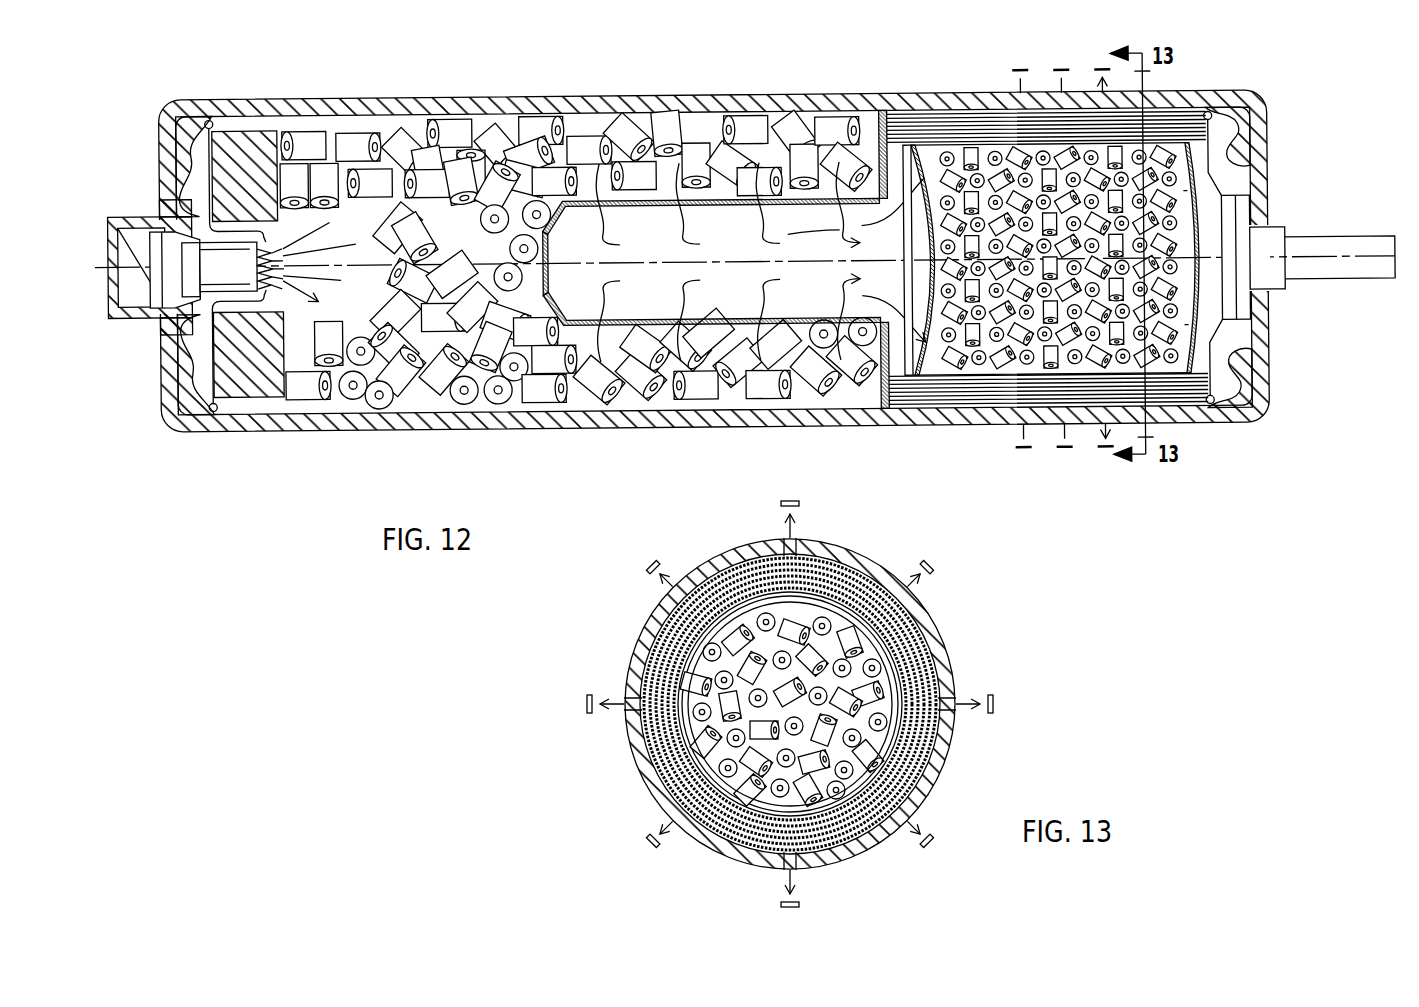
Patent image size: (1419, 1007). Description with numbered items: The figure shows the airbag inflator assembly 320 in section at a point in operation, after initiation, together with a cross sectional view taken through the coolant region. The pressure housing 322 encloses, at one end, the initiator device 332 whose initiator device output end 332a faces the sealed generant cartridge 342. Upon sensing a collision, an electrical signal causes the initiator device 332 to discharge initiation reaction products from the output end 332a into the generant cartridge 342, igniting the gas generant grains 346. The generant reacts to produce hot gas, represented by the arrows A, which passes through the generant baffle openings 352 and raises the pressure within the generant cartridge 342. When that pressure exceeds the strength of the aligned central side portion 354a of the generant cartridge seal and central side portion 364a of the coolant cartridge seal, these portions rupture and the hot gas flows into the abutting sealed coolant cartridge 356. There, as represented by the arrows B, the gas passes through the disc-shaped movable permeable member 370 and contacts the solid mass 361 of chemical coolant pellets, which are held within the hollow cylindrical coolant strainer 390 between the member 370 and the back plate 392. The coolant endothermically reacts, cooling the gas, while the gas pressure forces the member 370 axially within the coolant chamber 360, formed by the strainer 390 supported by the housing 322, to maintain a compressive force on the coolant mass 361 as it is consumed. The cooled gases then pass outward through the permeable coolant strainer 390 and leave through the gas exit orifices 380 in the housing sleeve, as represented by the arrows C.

In FIG. 12, the inflator assembly 320 is at (503, 73).
In FIG. 13, the inflator assembly 320 is at (976, 660).
In FIG. 12, the pressure housing 322 is at (975, 95).
In FIG. 13, the pressure housing 322 is at (702, 568).
In FIG. 12, the initiator device 332 is at (232, 248).
In FIG. 12, the initiator device output end 332a is at (262, 295).
In FIG. 12, the sealed generant cartridge 342 is at (322, 100).
In FIG. 12, the gas generant grains 346 is at (633, 378).
In FIG. 12, the generant baffle openings 352 is at (650, 203).
In FIG. 12, the central side portion of gas generant cartridge seal 354a is at (845, 203).
In FIG. 12, the sealed coolant cartridge 356 is at (1180, 290).
In FIG. 13, the sealed coolant cartridge 356 is at (895, 727).
In FIG. 12, the coolant chamber 360 is at (1195, 170).
In FIG. 13, the coolant chamber 360 is at (672, 678).
In FIG. 12, the solid mass of chemical coolant 361 is at (970, 140).
In FIG. 13, the solid mass of chemical coolant 361 is at (740, 815).
In FIG. 12, the central side portion of coolant cartridge seal 364a is at (933, 140).
In FIG. 12, the movable permeable member 370 is at (931, 379).
In FIG. 12, the gas exit orifices 380 is at (1053, 70).
In FIG. 13, the gas exit orifices 380 is at (778, 552).
In FIG. 12, the coolant strainer 390 is at (1185, 120).
In FIG. 13, the coolant strainer 390 is at (910, 630).
In FIG. 12, the back plate 392 is at (1205, 380).
In FIG. 12, the arrows A is at (807, 244).
In FIG. 12, the arrows B is at (903, 130).
In FIG. 12, the arrows C is at (1075, 72).
In FIG. 13, the arrows C is at (800, 532).